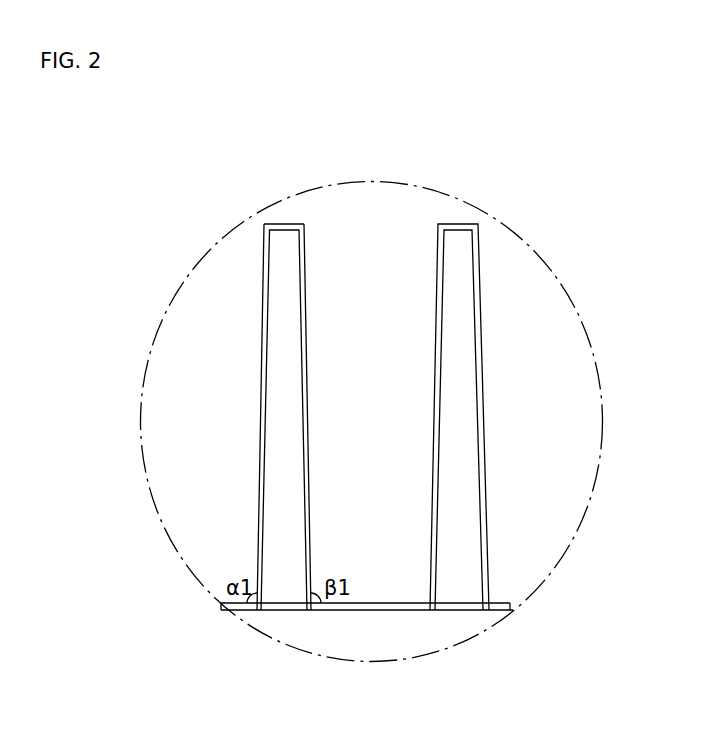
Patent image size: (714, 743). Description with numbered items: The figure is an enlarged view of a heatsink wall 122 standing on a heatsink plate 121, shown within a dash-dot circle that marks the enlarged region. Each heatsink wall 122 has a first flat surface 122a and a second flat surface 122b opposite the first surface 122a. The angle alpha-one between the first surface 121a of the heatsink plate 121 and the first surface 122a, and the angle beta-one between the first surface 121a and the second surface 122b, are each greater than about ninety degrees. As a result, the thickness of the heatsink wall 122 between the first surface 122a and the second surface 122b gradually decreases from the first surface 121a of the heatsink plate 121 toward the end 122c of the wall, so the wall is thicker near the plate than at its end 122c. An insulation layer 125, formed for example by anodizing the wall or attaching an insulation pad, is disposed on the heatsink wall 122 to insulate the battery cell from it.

The heatsink plate 121 is at (407, 645).
The first surface of the heatsink plate 121a is at (511, 608).
The heatsink wall 122 is at (280, 350).
The first flat surface of the heatsink wall 122a is at (267, 267).
The second flat surface of the heatsink wall 122b is at (303, 253).
The end of the heatsink wall 122c is at (283, 228).
The insulation layer 125 is at (258, 453).